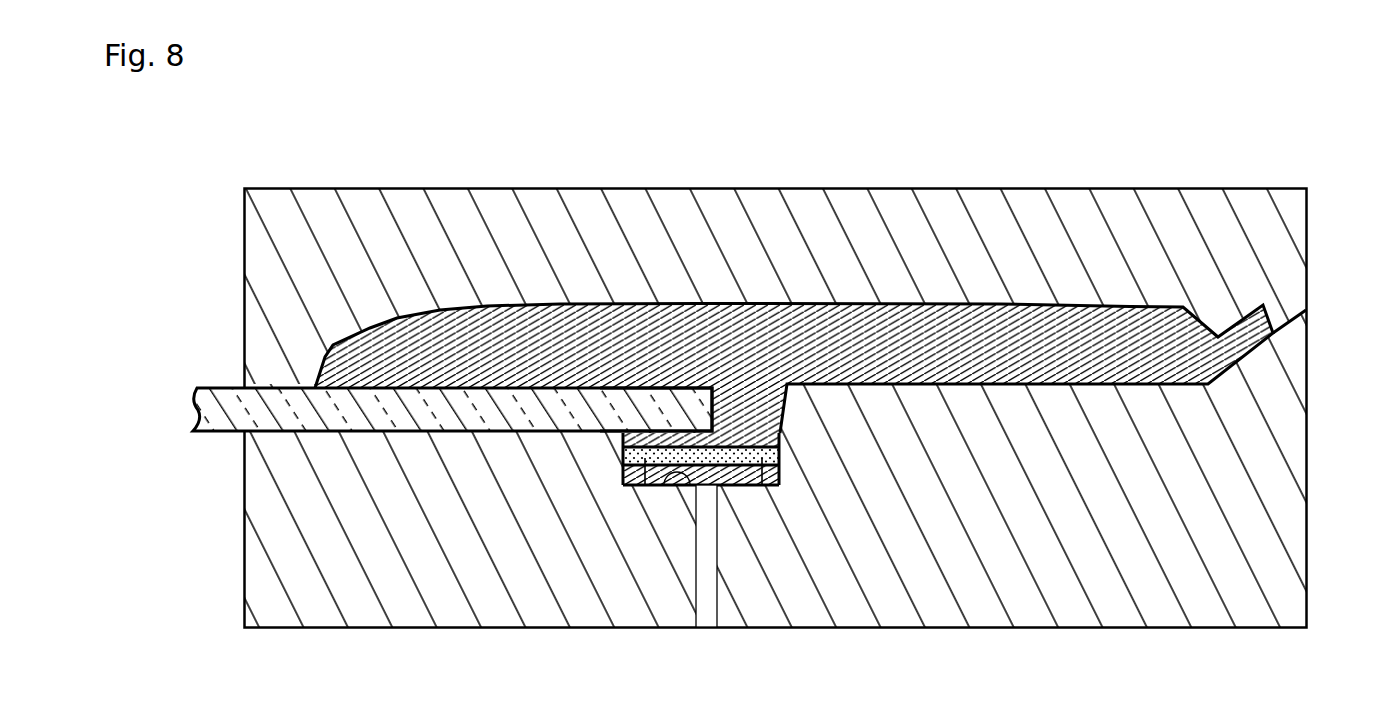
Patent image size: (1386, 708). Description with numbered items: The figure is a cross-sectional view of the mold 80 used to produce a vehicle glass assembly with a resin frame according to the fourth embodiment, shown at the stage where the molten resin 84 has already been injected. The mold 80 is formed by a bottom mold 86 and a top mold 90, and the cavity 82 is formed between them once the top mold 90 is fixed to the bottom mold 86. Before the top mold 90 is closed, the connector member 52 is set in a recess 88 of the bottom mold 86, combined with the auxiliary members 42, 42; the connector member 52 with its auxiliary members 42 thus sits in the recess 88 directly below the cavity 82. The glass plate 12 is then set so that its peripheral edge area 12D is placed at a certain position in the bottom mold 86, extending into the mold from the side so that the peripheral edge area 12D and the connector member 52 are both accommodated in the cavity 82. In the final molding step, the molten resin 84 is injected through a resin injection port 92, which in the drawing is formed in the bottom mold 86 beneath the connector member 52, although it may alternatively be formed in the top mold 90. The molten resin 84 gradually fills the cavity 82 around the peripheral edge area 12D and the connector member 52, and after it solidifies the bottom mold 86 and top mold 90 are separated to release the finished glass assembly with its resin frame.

The mold 80 is at (802, 371).
The top mold 90 is at (1309, 229).
The bottom mold 86 is at (1309, 450).
The molten resin 84 is at (906, 330).
The cavity 82 is at (740, 356).
The glass plate 12 is at (223, 384).
The peripheral edge area 12D is at (632, 407).
The auxiliary member 42 is at (622, 484).
The recess 88 is at (673, 481).
The resin injection port 92 is at (705, 615).
The connector member 52 is at (735, 485).